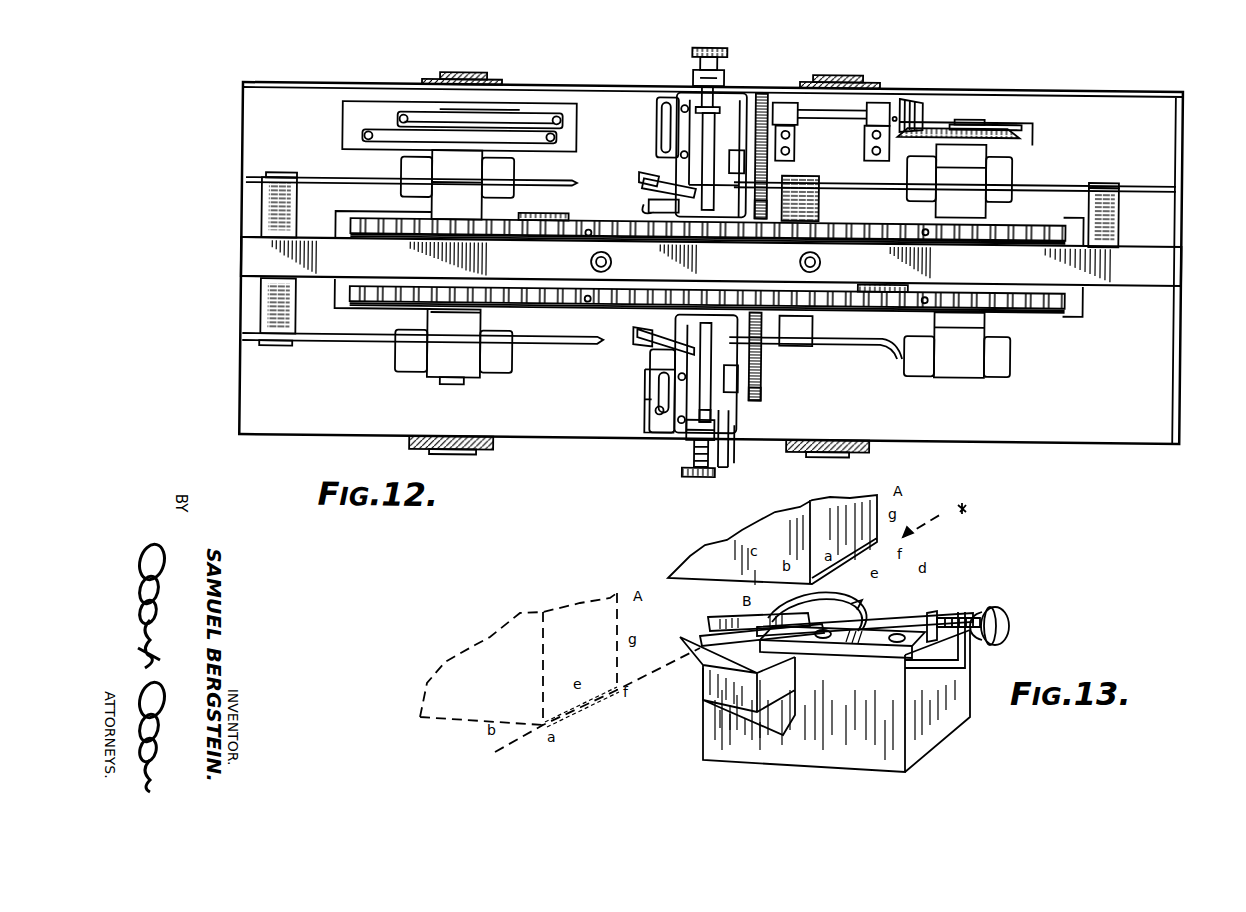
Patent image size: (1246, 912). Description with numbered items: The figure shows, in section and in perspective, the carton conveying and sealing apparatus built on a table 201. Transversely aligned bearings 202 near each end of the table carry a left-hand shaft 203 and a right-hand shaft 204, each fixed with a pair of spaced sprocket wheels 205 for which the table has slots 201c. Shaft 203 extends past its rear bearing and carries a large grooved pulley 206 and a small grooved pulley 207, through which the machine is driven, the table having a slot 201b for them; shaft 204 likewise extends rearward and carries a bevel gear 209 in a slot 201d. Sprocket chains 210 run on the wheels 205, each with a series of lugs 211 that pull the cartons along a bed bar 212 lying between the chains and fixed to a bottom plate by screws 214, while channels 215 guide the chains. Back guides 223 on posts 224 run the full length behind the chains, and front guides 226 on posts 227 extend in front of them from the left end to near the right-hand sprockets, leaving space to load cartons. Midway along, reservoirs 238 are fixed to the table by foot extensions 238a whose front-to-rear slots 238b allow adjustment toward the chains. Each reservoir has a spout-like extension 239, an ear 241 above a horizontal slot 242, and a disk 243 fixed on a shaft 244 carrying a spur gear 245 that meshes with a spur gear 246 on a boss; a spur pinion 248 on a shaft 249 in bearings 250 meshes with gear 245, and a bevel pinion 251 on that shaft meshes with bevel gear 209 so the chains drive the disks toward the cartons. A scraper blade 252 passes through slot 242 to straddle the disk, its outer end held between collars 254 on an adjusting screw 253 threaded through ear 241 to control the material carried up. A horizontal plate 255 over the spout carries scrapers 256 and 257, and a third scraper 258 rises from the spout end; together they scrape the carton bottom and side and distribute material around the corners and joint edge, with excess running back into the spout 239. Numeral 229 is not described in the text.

In FIG. 12, the table 201 is at (1165, 100).
In FIG. 12, the slot 201b is at (348, 100).
In FIG. 12, the slots 201c is at (355, 307).
In FIG. 12, the slot 201d is at (1032, 115).
In FIG. 12, the bearings 202 is at (435, 165).
In FIG. 12, the shaft 203 is at (450, 382).
In FIG. 12, the shaft 204 is at (965, 120).
In FIG. 12, the sprocket wheels 205 is at (360, 217).
In FIG. 12, the large grooved pulley 206 is at (366, 132).
In FIG. 12, the small grooved pulley 207 is at (408, 110).
In FIG. 12, the bevel gear 209 is at (1024, 126).
In FIG. 12, the sprocket chains 210 is at (703, 233).
In FIG. 12, the lugs 211 is at (588, 232).
In FIG. 12, the bed bar 212 is at (1143, 248).
In FIG. 12, the screws 214 is at (613, 258).
In FIG. 12, the channels 215 is at (555, 210).
In FIG. 12, the back guides 223 is at (340, 177).
In FIG. 12, the posts 224 is at (280, 172).
In FIG. 12, the front guides 226 is at (370, 341).
In FIG. 12, the posts 227 is at (268, 345).
In FIG. 12, the mounting block 229 is at (455, 70).
In FIG. 12, the reservoirs 238 is at (768, 380).
In FIG. 13, the reservoirs 238 is at (850, 755).
In FIG. 12, the foot extensions 238a is at (660, 93).
In FIG. 12, the slots 238b is at (662, 128).
In FIG. 12, the spout-like extension 239 is at (650, 340).
In FIG. 13, the spout-like extension 239 is at (700, 680).
In FIG. 12, the ear 241 is at (692, 433).
In FIG. 13, the ear 241 is at (933, 612).
In FIG. 12, the horizontal slot 242 is at (716, 440).
In FIG. 13, the horizontal slot 242 is at (905, 660).
In FIG. 12, the disk 243 is at (712, 345).
In FIG. 13, the disk 243 is at (866, 625).
In FIG. 12, the shaft 244 is at (742, 370).
In FIG. 12, the spur gear 245 is at (770, 170).
In FIG. 12, the spur gear 246 is at (822, 196).
In FIG. 12, the spur pinion 248 is at (760, 88).
In FIG. 12, the shaft 249 is at (833, 112).
In FIG. 12, the bearings 250 is at (786, 97).
In FIG. 12, the bevel pinion 251 is at (920, 93).
In FIG. 12, the scraper blade 252 is at (736, 440).
In FIG. 13, the scraper blade 252 is at (945, 670).
In FIG. 12, the adjusting screw 253 is at (688, 470).
In FIG. 13, the adjusting screw 253 is at (1005, 612).
In FIG. 12, the collars 254 is at (698, 455).
In FIG. 13, the collars 254 is at (985, 610).
In FIG. 12, the horizontal plate 255 is at (690, 65).
In FIG. 13, the horizontal plate 255 is at (868, 657).
In FIG. 12, the scraper 256 is at (660, 210).
In FIG. 13, the scraper 256 is at (712, 636).
In FIG. 12, the scraper 257 is at (645, 186).
In FIG. 13, the scraper 257 is at (708, 626).
In FIG. 12, the third scraper 258 is at (640, 166).
In FIG. 13, the third scraper 258 is at (698, 650).